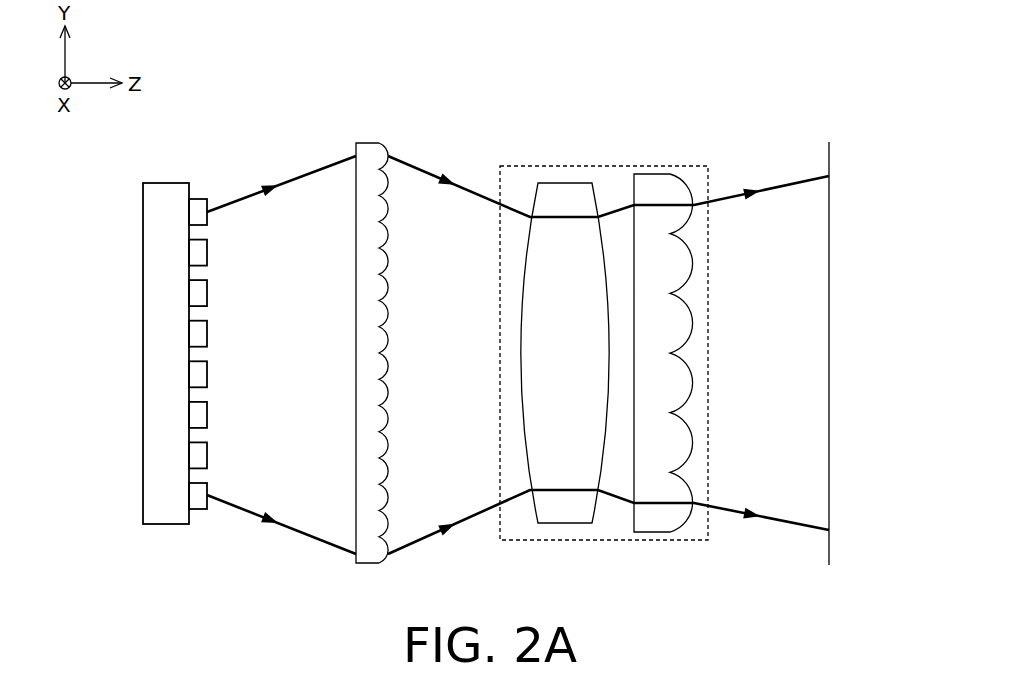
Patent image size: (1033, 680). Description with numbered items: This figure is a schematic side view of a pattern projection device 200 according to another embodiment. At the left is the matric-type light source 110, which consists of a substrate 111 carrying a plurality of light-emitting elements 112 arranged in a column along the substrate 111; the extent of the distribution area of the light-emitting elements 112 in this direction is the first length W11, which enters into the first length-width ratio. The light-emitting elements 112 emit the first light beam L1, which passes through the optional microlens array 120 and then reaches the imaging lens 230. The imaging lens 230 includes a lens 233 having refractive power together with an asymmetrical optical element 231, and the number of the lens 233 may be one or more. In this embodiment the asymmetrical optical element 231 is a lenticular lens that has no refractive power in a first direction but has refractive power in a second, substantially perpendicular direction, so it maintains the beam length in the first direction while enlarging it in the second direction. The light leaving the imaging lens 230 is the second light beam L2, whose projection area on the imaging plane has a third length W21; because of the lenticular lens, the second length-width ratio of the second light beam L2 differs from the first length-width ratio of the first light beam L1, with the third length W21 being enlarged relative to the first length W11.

The pattern projection device 200 is at (163, 155).
The matric-type light source 110 is at (192, 395).
The substrate 111 is at (170, 525).
The light-emitting elements 112 is at (202, 509).
The microlens array 120 is at (363, 563).
The imaging lens 230 is at (657, 381).
The asymmetrical optical element 231 is at (662, 523).
The lens 233 is at (565, 523).
The first length W11 is at (185, 191).
The third length W21 is at (829, 176).
The first light beam L1 is at (281, 352).
The second light beam L2 is at (750, 337).